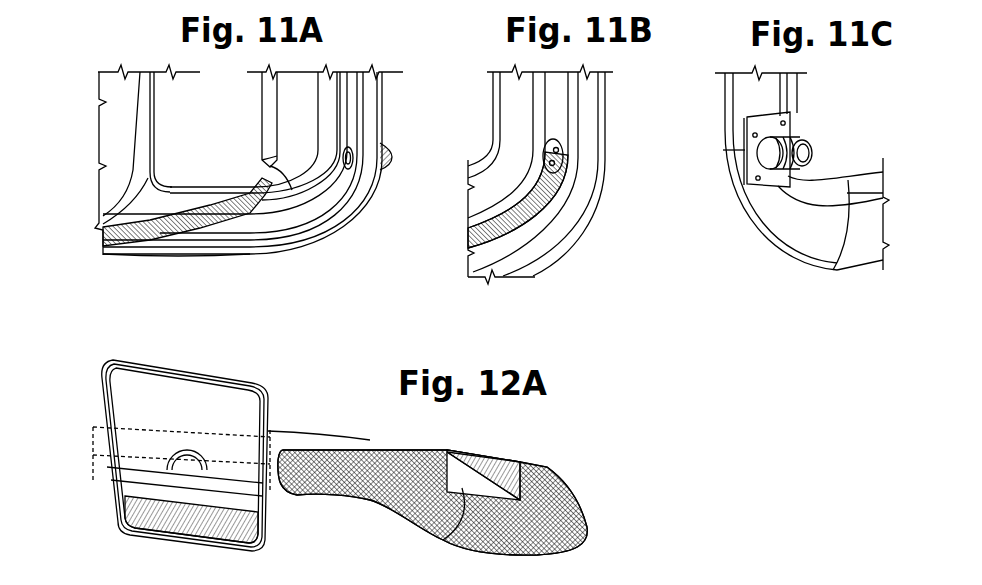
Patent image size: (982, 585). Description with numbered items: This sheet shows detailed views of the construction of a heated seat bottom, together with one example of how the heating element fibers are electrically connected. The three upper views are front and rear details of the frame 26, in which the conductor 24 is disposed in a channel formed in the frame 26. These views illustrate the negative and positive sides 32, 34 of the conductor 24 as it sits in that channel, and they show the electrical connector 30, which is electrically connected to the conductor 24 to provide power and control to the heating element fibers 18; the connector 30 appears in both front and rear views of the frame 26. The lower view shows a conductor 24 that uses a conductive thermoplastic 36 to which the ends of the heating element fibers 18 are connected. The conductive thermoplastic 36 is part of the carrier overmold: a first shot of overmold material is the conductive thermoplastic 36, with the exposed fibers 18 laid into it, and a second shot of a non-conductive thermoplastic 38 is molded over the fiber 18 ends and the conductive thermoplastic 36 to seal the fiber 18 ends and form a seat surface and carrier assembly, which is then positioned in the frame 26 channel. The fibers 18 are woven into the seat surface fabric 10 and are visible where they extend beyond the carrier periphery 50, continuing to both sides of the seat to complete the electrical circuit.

In FIG. 11A, the seat surface fabric 10 is at (118, 95).
In FIG. 11A, the conductor 24 is at (278, 97).
In FIG. 11A, the frame 26 is at (233, 254).
In FIG. 11B, the frame 26 is at (562, 214).
In FIG. 11C, the frame 26 is at (760, 223).
In FIG. 12A, the frame 26 is at (577, 514).
In FIG. 11A, the connector 30 is at (367, 156).
In FIG. 11B, the connector 30 is at (564, 150).
In FIG. 11C, the connector 30 is at (725, 150).
In FIG. 11A, the negative side 32 is at (262, 200).
In FIG. 11A, the positive side 34 is at (282, 165).
In FIG. 12A, the carrier periphery 50 is at (86, 362).
In FIG. 12A, the heating element fibers 18 is at (464, 462).
In FIG. 12A, the conductive thermoplastic 36 is at (437, 538).
In FIG. 12A, the non-conductive thermoplastic 38 is at (510, 468).